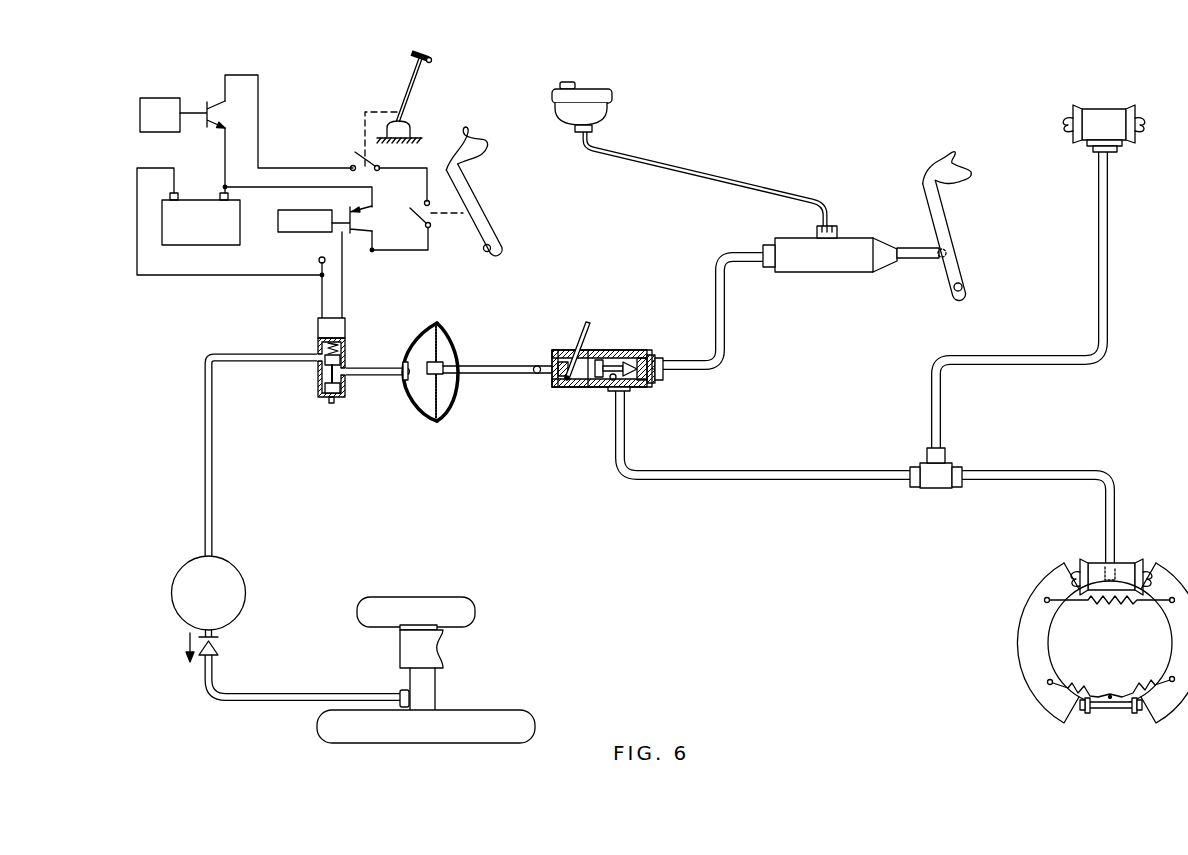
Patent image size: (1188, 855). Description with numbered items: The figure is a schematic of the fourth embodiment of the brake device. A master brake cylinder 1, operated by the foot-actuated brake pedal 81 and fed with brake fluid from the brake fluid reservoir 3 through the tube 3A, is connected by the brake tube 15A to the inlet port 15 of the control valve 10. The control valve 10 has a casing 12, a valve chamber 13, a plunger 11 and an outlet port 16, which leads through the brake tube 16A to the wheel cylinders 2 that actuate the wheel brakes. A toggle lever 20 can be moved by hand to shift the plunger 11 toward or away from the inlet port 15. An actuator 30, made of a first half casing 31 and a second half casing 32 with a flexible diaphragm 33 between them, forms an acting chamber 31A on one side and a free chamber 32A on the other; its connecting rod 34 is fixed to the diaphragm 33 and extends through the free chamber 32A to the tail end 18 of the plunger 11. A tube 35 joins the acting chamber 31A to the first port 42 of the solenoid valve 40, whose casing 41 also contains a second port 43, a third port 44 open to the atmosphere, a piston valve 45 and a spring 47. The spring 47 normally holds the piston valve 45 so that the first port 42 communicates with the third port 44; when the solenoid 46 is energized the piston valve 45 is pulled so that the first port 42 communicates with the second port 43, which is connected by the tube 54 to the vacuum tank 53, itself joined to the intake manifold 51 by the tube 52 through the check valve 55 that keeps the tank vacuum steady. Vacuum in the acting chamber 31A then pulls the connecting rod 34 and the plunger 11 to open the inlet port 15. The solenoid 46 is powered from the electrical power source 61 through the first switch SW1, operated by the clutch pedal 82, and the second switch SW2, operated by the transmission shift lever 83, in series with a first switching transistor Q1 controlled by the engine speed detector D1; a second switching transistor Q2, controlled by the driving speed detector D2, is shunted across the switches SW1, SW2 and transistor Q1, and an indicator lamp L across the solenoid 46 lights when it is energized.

The master brake cylinder 1 is at (830, 273).
The wheel cylinders 2 is at (1108, 108).
The brake fluid reservoir 3 is at (608, 112).
The tube 3A is at (716, 173).
The control valve 10 is at (611, 354).
The plunger 11 is at (606, 358).
The casing 12 is at (642, 389).
The valve chamber 13 is at (645, 355).
The inlet port 15 is at (657, 382).
The brake tube 15A is at (727, 328).
The outlet port 16 is at (610, 389).
The brake tube 16A is at (735, 481).
The tail end 18 is at (548, 377).
The toggle lever 20 is at (583, 323).
The actuator 30 is at (441, 388).
The first half casing 31 is at (421, 328).
The acting chamber 31A is at (417, 357).
The second half casing 32 is at (455, 346).
The free chamber 32A is at (448, 410).
The flexible diaphragm 33 is at (425, 404).
The connecting rod 34 is at (500, 378).
The tube 35 is at (370, 378).
The solenoid valve 40 is at (326, 383).
The casing 41 is at (318, 350).
The first port 42 is at (342, 362).
The second port 43 is at (317, 372).
The third port 44 is at (316, 395).
The piston valve 45 is at (338, 391).
The solenoid 46 is at (318, 326).
The spring 47 is at (338, 346).
The intake manifold 51 is at (437, 703).
The tube 52 is at (278, 690).
The vacuum tank 53 is at (237, 572).
The tube 54 is at (206, 419).
The check valve 55 is at (222, 643).
The electrical power source 61 is at (185, 247).
The brake pedal 81 is at (945, 218).
The clutch pedal 82 is at (492, 143).
The transmission shift lever 83 is at (429, 54).
The engine speed detector D1 is at (156, 98).
The first switching transistor Q1 is at (206, 102).
The driving speed detector D2 is at (293, 233).
The second switching transistor Q2 is at (377, 262).
The indicator lamp L is at (319, 261).
The first switch SW1 is at (419, 217).
The second switch SW2 is at (389, 156).